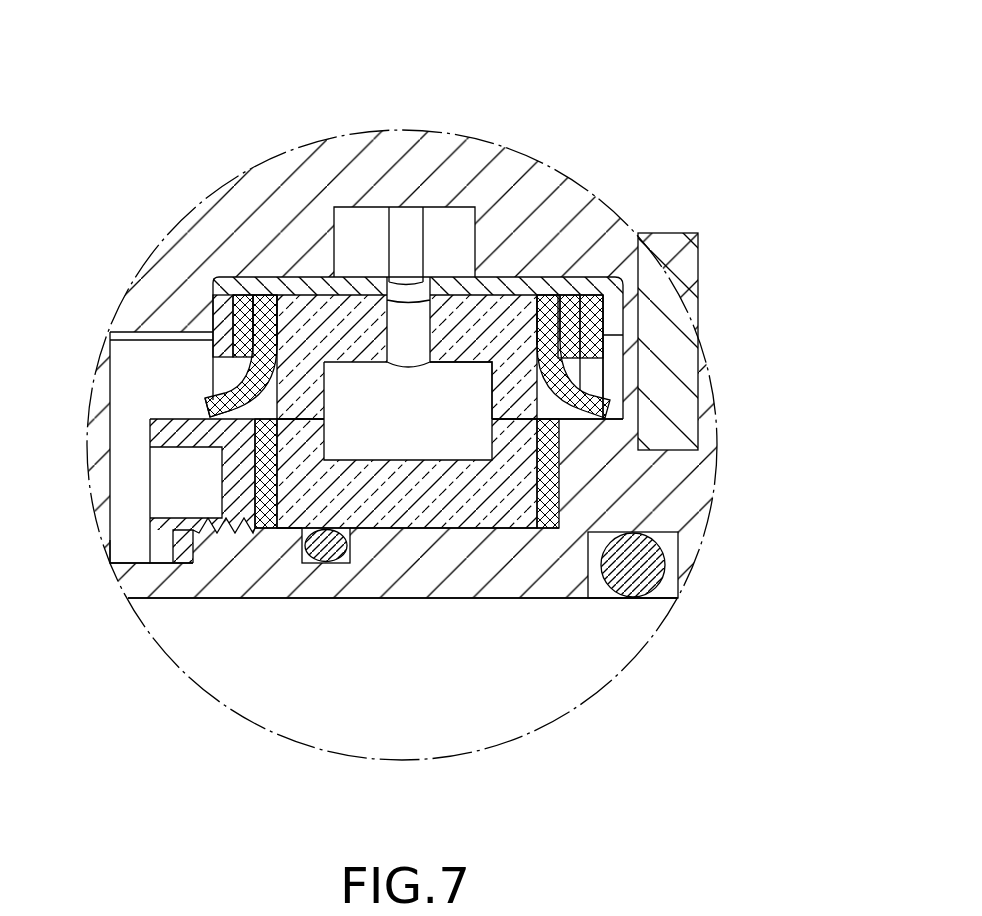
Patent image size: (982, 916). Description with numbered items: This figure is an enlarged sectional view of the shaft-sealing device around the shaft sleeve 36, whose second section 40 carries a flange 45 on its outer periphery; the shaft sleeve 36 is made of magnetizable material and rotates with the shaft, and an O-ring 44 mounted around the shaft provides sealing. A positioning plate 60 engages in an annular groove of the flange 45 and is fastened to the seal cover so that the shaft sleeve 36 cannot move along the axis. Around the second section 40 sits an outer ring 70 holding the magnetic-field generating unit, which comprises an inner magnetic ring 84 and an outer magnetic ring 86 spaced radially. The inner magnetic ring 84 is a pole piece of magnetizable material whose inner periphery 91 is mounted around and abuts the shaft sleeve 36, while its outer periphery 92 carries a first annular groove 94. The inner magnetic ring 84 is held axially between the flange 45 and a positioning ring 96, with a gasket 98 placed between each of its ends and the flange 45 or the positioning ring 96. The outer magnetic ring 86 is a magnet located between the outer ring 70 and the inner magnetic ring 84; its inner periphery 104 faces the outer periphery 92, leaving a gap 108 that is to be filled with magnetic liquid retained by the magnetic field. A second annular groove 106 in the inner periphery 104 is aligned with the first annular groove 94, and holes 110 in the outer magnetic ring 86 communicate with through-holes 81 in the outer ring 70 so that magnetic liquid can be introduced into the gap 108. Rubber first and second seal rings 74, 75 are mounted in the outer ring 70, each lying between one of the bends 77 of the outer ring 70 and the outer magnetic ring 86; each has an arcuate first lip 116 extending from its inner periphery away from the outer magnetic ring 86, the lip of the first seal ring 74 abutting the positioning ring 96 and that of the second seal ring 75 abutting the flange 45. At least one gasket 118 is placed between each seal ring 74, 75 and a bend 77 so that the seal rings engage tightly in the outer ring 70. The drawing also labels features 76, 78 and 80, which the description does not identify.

The shaft sleeve 36 is at (140, 560).
The second section 40 is at (192, 583).
The O-ring 44 is at (623, 578).
The flange 45 is at (633, 504).
The positioning plate 60 is at (663, 292).
The outer ring 70 is at (481, 277).
The first seal ring 74 is at (272, 303).
The second seal ring 75 is at (550, 317).
The housing cap 76 is at (228, 283).
The bend 77 is at (623, 307).
The flange 78 is at (617, 283).
The cover plate 80 is at (309, 285).
The through-hole 81 is at (423, 272).
The inner magnetic ring 84 is at (435, 507).
The outer magnetic ring 86 is at (485, 327).
The inner periphery 91 is at (507, 598).
The outer periphery 92 is at (307, 420).
The first annular groove 94 is at (448, 448).
The positioning ring 96 is at (237, 496).
The gasket 98 is at (267, 448).
The inner periphery 104 is at (292, 415).
The second annular groove 106 is at (475, 402).
The gap 108 is at (270, 416).
The hole 110 is at (395, 328).
The first lip 116 is at (577, 398).
The gasket 118 is at (607, 347).